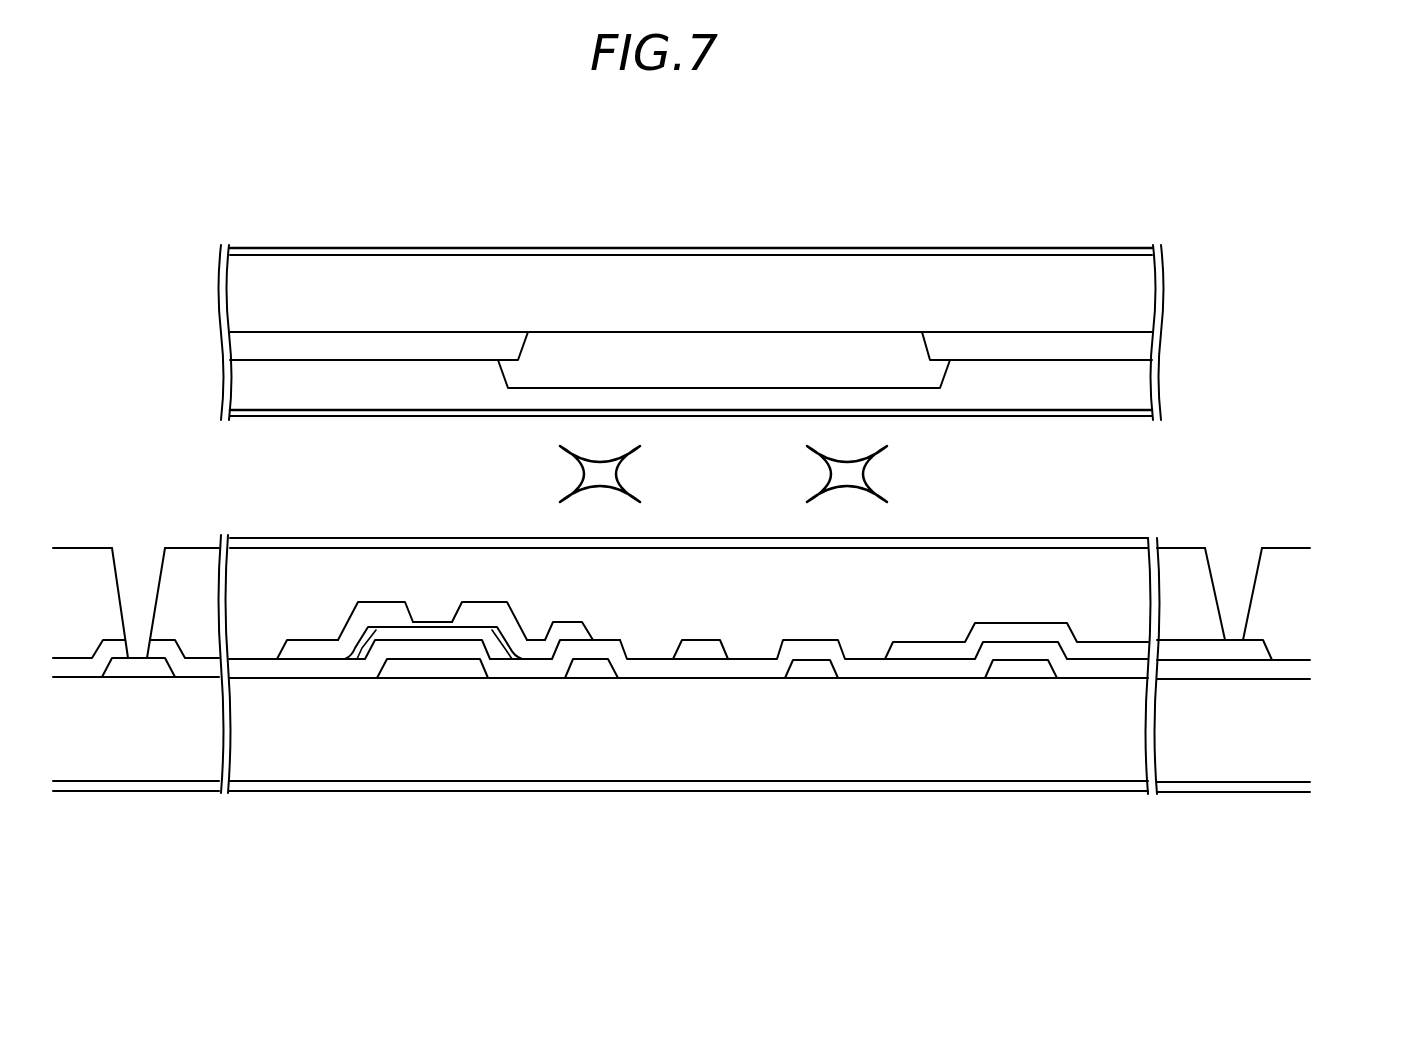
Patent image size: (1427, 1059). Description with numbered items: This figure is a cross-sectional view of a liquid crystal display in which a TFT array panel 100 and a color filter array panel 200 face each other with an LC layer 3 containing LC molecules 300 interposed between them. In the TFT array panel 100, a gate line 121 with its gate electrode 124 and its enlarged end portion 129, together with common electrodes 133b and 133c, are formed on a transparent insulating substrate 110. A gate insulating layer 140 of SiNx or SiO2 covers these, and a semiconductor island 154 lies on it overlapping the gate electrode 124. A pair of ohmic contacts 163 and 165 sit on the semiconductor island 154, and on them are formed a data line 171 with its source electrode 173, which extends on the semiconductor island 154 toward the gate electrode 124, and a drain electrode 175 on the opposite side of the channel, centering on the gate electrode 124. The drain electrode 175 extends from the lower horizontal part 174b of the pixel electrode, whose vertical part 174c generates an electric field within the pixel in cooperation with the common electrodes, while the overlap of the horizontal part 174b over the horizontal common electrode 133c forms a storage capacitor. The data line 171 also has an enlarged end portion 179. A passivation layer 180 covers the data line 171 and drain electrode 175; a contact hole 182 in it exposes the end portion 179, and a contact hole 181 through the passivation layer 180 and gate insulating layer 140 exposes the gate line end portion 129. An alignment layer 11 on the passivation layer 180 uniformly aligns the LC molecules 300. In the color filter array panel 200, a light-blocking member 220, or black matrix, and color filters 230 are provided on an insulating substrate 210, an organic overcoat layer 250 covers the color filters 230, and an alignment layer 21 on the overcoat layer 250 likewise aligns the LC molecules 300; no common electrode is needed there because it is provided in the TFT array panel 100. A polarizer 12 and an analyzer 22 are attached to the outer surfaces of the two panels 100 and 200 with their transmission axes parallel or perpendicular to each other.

The LC layer 3 is at (1190, 468).
The alignment layer 11 is at (267, 540).
The polarizer 12 is at (958, 788).
The alignment layer 21 is at (1093, 413).
The analyzer 22 is at (608, 250).
The TFT array panel 100 is at (1322, 616).
The insulating substrate 110 is at (755, 766).
The gate line 121 is at (1030, 670).
The gate electrode 124 is at (439, 668).
The end portion of gate line 129 is at (135, 667).
The common electrode 133b is at (810, 670).
The common electrode 133c is at (605, 668).
The gate insulating layer 140 is at (658, 667).
The semiconductor island 154 is at (353, 638).
The ohmic contact 163 is at (395, 628).
The ohmic contact 165 is at (481, 628).
The data line 171 is at (297, 650).
The source electrode 173 is at (348, 655).
The lower horizontal part of pixel electrode 174b is at (575, 633).
The vertical part of pixel electrode 174c is at (698, 650).
The drain electrode 175 is at (512, 630).
The end portion of data line 179 is at (1233, 650).
The passivation layer 180 is at (1108, 612).
The contact hole 181 is at (117, 575).
The contact hole 182 is at (1215, 576).
The color filter array panel 200 is at (1218, 317).
The insulating substrate 210 is at (750, 302).
The light-blocking member 220 is at (437, 345).
The color filter 230 is at (855, 358).
The overcoat layer 250 is at (324, 385).
The LC molecules 300 is at (878, 466).